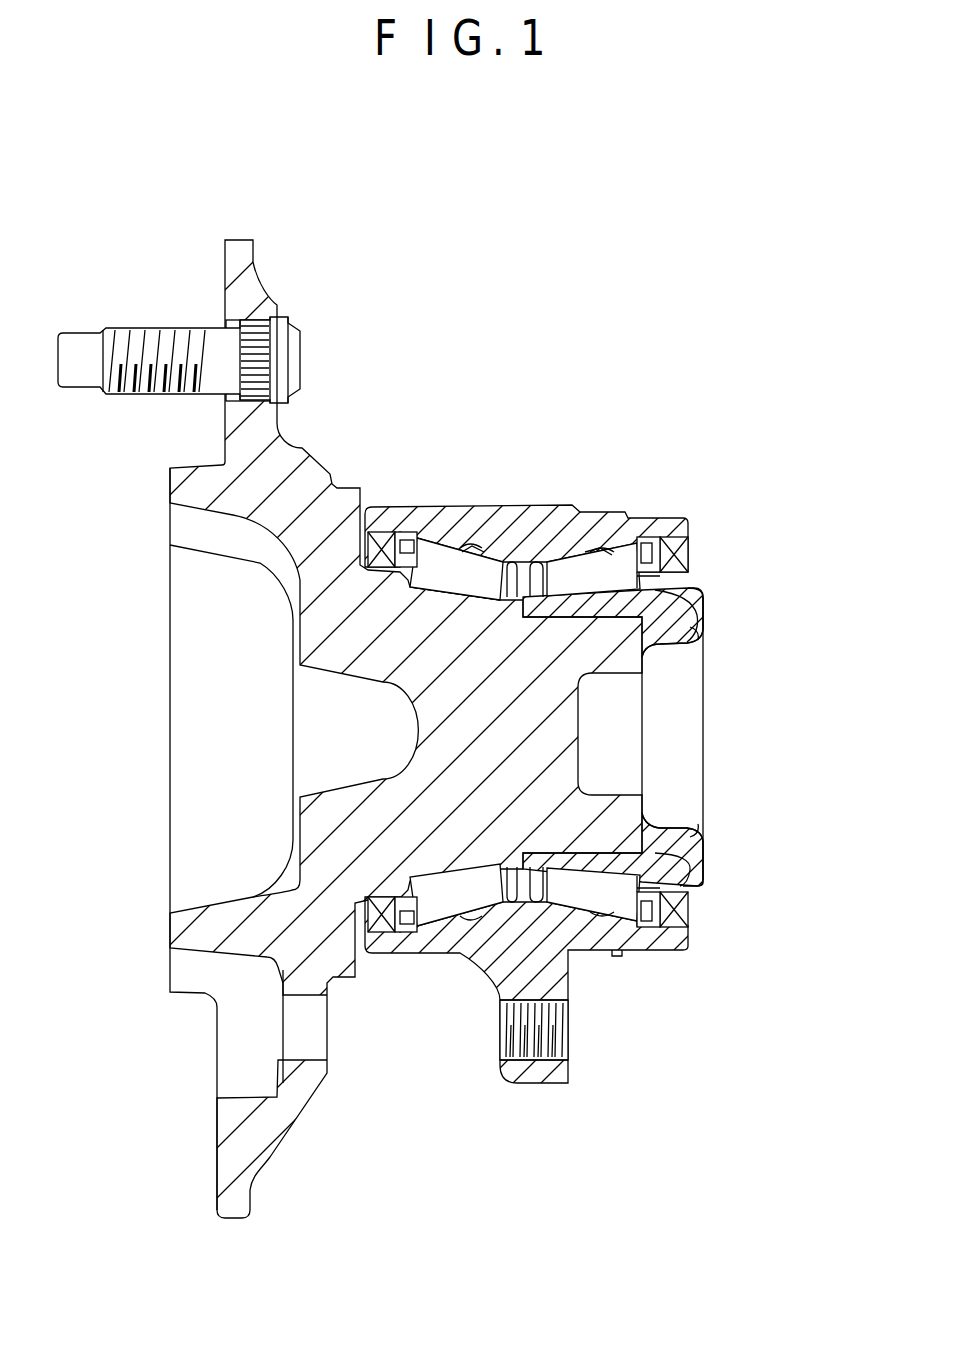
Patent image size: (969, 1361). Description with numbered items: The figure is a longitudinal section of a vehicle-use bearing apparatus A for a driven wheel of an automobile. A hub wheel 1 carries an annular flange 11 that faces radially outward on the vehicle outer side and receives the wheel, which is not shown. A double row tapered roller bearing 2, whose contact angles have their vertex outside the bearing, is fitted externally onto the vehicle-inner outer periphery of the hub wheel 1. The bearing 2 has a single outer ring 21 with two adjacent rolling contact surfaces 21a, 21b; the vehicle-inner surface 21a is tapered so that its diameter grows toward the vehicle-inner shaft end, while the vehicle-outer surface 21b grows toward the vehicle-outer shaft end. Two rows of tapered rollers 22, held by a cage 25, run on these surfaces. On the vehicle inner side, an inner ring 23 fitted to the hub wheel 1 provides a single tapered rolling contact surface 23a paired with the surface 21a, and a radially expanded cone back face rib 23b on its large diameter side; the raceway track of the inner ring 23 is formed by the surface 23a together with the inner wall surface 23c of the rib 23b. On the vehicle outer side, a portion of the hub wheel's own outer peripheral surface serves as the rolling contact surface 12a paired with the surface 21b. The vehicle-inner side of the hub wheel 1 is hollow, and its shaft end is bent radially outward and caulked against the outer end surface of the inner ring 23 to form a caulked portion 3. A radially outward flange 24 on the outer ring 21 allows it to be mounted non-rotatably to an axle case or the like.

The hub wheel 1 is at (313, 830).
The annular flange 11 is at (247, 262).
The double row tapered roller bearing 2 is at (526, 766).
The caulked portion 3 is at (695, 607).
The rolling contact surface 12a is at (470, 603).
The outer ring 21 is at (550, 662).
The rolling contact surface 21a is at (590, 550).
The rolling contact surface 21b is at (470, 562).
The tapered rollers 22 is at (440, 548).
The inner ring 23 is at (711, 703).
The rolling contact surface 23a is at (682, 638).
The cone back face rib 23b is at (645, 587).
The inner wall surface 23c is at (665, 588).
The radially outward flange 24 is at (535, 1072).
The cage 25 is at (383, 512).
The vehicle-use bearing apparatus A is at (634, 334).